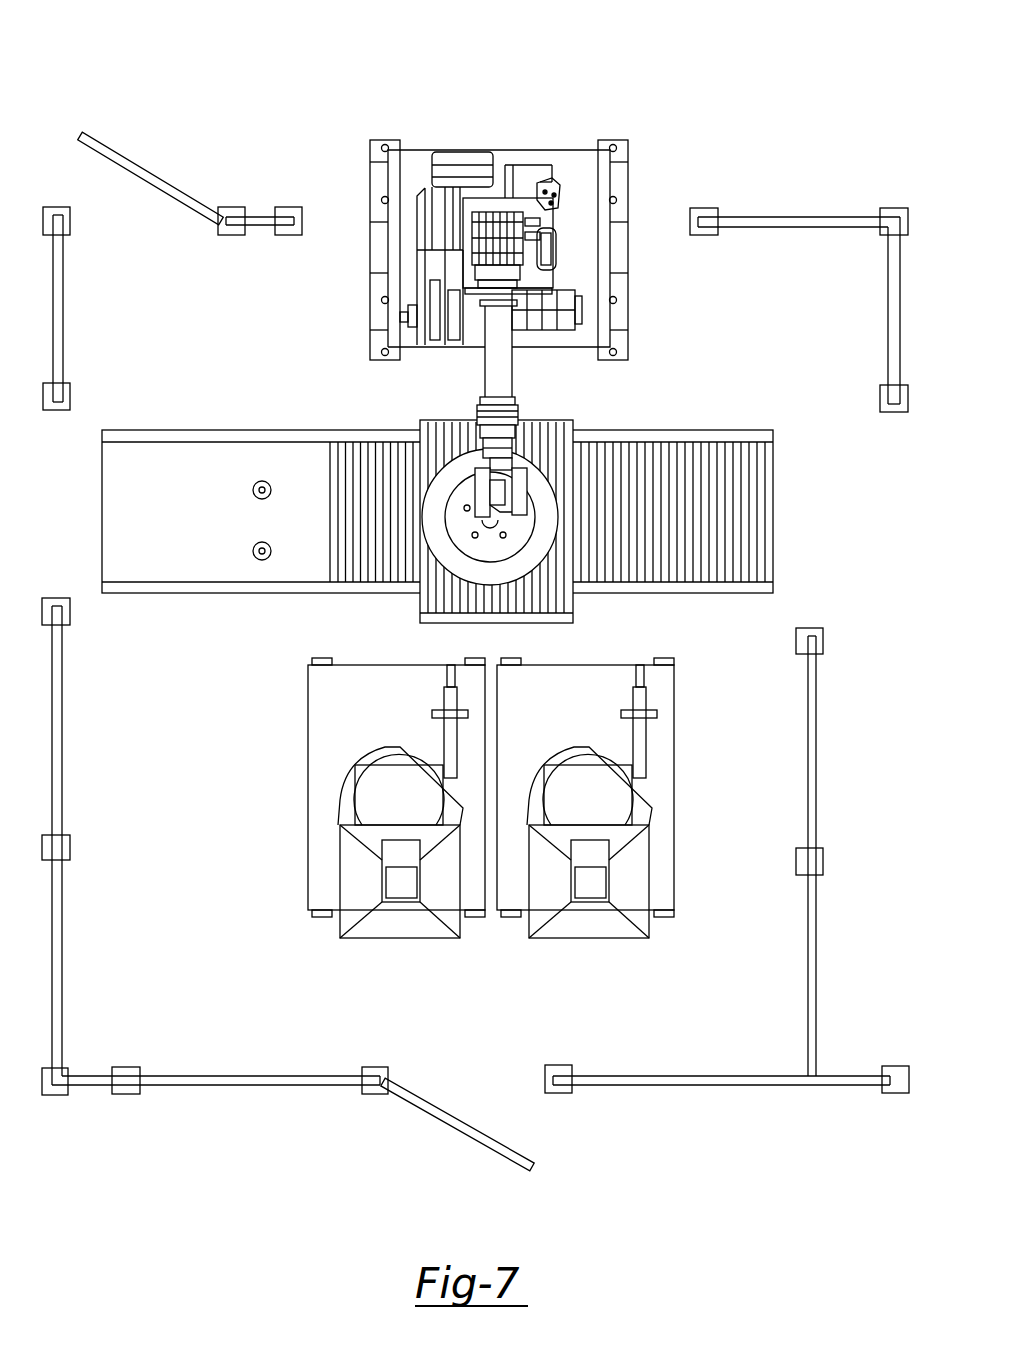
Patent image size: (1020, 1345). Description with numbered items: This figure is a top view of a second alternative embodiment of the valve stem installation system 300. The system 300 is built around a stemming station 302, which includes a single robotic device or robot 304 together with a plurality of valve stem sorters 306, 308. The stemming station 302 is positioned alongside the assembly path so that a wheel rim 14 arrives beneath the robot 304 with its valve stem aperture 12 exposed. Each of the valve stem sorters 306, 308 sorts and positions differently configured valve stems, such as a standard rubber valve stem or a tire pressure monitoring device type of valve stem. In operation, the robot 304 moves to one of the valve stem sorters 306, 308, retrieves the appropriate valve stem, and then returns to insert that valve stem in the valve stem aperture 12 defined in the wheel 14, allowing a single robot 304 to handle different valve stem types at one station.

The valve stem installation system 300 is at (230, 136).
The stemming station 302 is at (462, 120).
The robot 304 is at (500, 212).
The aperture 12 is at (447, 478).
The wheel rim 14 is at (542, 492).
The valve stem sorter 306 is at (365, 876).
The valve stem sorter 308 is at (620, 875).